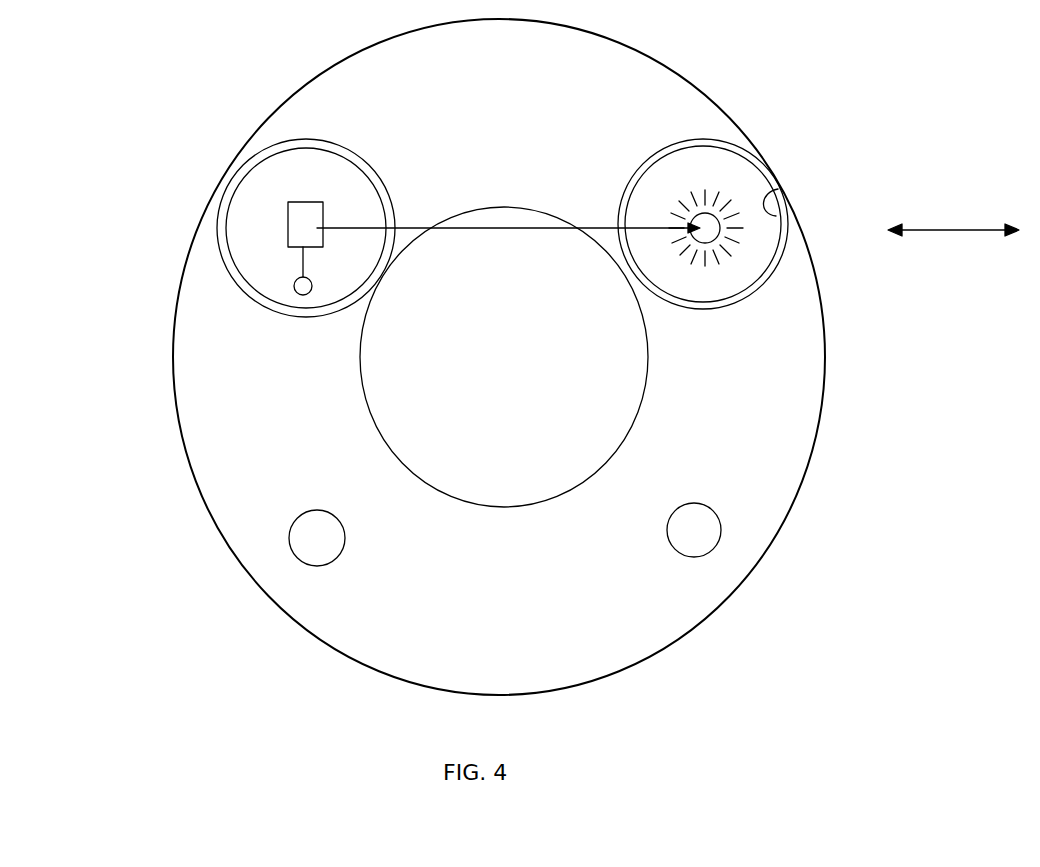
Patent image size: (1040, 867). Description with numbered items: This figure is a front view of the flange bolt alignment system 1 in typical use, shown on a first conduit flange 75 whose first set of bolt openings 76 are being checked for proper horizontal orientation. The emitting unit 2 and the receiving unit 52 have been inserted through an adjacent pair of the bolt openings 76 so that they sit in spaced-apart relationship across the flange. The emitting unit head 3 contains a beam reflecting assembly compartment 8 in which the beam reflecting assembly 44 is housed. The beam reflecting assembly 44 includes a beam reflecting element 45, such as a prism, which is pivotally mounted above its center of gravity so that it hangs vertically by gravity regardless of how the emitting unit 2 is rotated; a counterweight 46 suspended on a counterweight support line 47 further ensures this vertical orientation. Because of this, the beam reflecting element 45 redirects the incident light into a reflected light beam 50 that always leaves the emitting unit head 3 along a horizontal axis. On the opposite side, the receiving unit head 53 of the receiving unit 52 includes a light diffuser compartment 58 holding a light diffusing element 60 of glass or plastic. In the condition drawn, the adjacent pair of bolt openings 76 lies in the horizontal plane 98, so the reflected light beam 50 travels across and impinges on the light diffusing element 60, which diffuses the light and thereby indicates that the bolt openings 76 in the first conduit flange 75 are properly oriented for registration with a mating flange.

The flange bolt alignment system 1 is at (250, 98).
The emitting unit 2 is at (378, 136).
The emitting unit head 3 is at (398, 178).
The beam reflecting assembly compartment 8 is at (333, 153).
The beam reflecting assembly 44 is at (250, 198).
The beam reflecting element 45 is at (324, 193).
The counterweight 46 is at (296, 278).
The counterweight support line 47 is at (306, 256).
The reflected light beam 50 is at (500, 210).
The receiving unit 52 is at (663, 126).
The receiving unit head 53 is at (640, 158).
The light diffuser compartment 58 is at (777, 182).
The light diffusing element 60 is at (714, 212).
The first conduit flange 75 is at (634, 72).
The first set of bolt openings 76 is at (340, 531).
The horizontal plane 98 is at (949, 230).